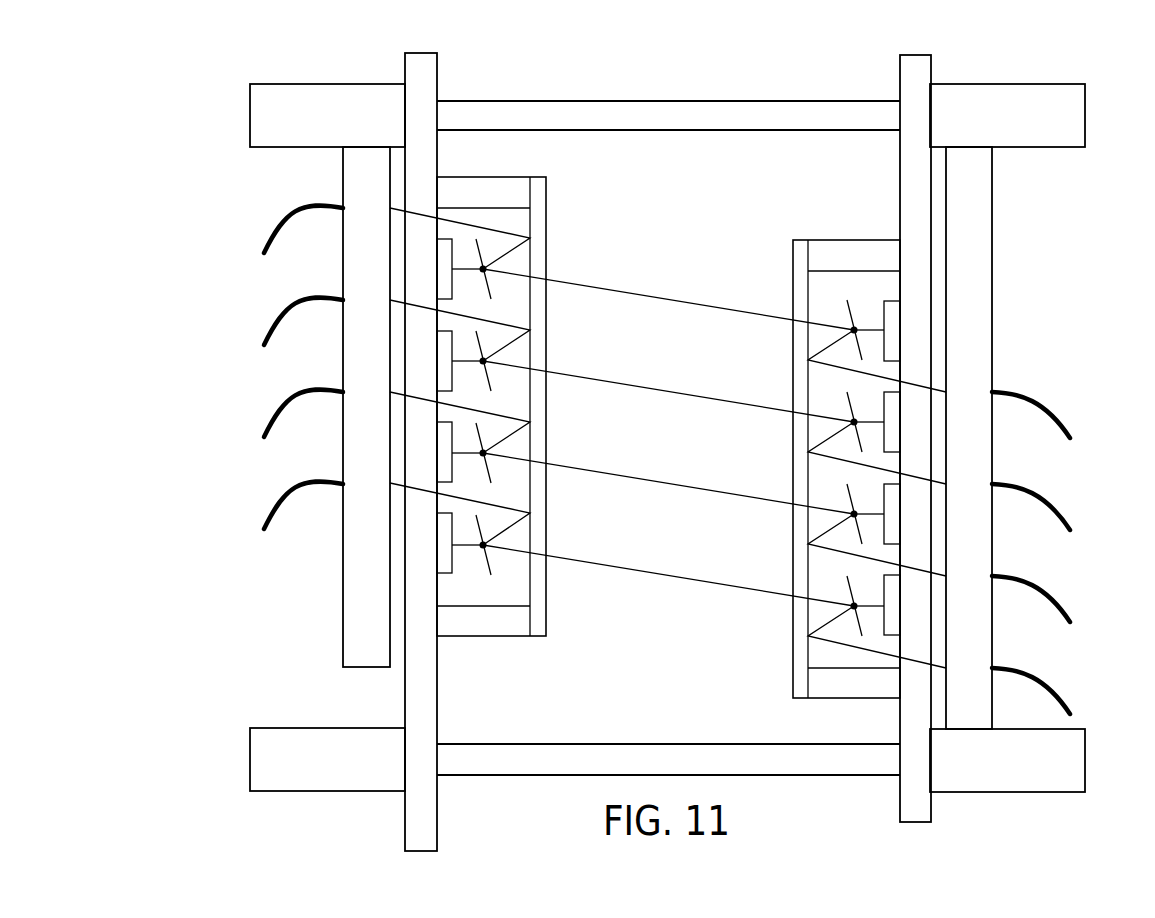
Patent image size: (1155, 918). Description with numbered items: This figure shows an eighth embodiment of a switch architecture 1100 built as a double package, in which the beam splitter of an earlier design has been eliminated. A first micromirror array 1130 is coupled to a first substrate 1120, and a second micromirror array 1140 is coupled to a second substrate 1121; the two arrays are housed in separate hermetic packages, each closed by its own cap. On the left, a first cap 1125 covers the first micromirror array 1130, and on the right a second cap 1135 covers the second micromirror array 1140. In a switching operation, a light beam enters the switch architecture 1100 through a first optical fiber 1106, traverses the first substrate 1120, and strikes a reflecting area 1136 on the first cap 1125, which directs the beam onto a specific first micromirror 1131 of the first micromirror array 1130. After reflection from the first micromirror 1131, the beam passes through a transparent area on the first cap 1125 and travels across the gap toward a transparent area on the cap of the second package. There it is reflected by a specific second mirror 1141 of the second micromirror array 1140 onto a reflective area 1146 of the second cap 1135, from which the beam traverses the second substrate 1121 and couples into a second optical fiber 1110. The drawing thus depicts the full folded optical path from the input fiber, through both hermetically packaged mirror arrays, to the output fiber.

The switch architecture 1100 is at (695, 51).
The first substrate 1120 is at (420, 54).
The second substrate 1121 is at (913, 55).
The first optical fiber 1106 is at (280, 213).
The second optical fiber 1110 is at (1047, 403).
The first cap 1125 is at (540, 177).
The second cap 1135 is at (865, 240).
The first micromirror array 1130 is at (477, 592).
The second micromirror array 1140 is at (847, 653).
The first micromirror 1131 is at (491, 297).
The second mirror 1141 is at (847, 304).
The reflecting area 1136 is at (532, 237).
The reflective area 1146 is at (808, 360).